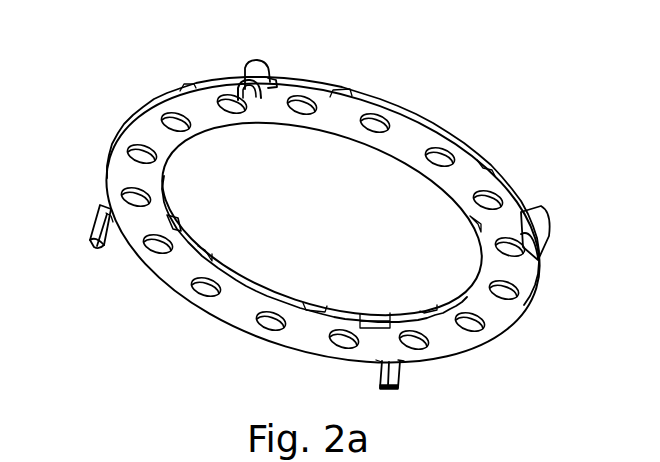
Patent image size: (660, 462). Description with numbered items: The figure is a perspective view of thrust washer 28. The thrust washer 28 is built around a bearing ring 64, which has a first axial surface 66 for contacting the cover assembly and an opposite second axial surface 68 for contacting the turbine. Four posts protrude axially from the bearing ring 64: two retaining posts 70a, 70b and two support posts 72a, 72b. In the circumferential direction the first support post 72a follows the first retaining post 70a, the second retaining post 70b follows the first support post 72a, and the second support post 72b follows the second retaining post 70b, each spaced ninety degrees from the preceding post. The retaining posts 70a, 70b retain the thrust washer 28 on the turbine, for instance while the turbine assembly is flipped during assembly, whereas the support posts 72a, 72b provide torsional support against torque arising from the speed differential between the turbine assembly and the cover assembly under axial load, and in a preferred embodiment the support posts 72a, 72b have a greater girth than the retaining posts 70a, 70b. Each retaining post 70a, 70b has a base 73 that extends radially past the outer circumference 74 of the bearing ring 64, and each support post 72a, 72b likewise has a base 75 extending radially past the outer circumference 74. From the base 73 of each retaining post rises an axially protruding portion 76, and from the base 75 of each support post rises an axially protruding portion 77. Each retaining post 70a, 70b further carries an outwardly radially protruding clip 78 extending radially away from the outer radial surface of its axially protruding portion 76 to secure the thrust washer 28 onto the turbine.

The thrust washer 28 is at (319, 218).
The bearing ring 64 is at (471, 158).
The first axial surface 66 is at (415, 110).
The second axial surface 68 is at (405, 150).
The first retaining post 70a is at (278, 48).
The second retaining post 70b is at (397, 371).
The first support post 72a is at (59, 238).
The second support post 72b is at (541, 230).
The base 73 is at (380, 363).
The outer circumference 74 is at (378, 104).
The base 75 is at (119, 248).
The axially protruding portion 76 is at (277, 81).
The axially protruding portion 77 is at (91, 238).
The outwardly radially protruding clip 78 is at (244, 86).